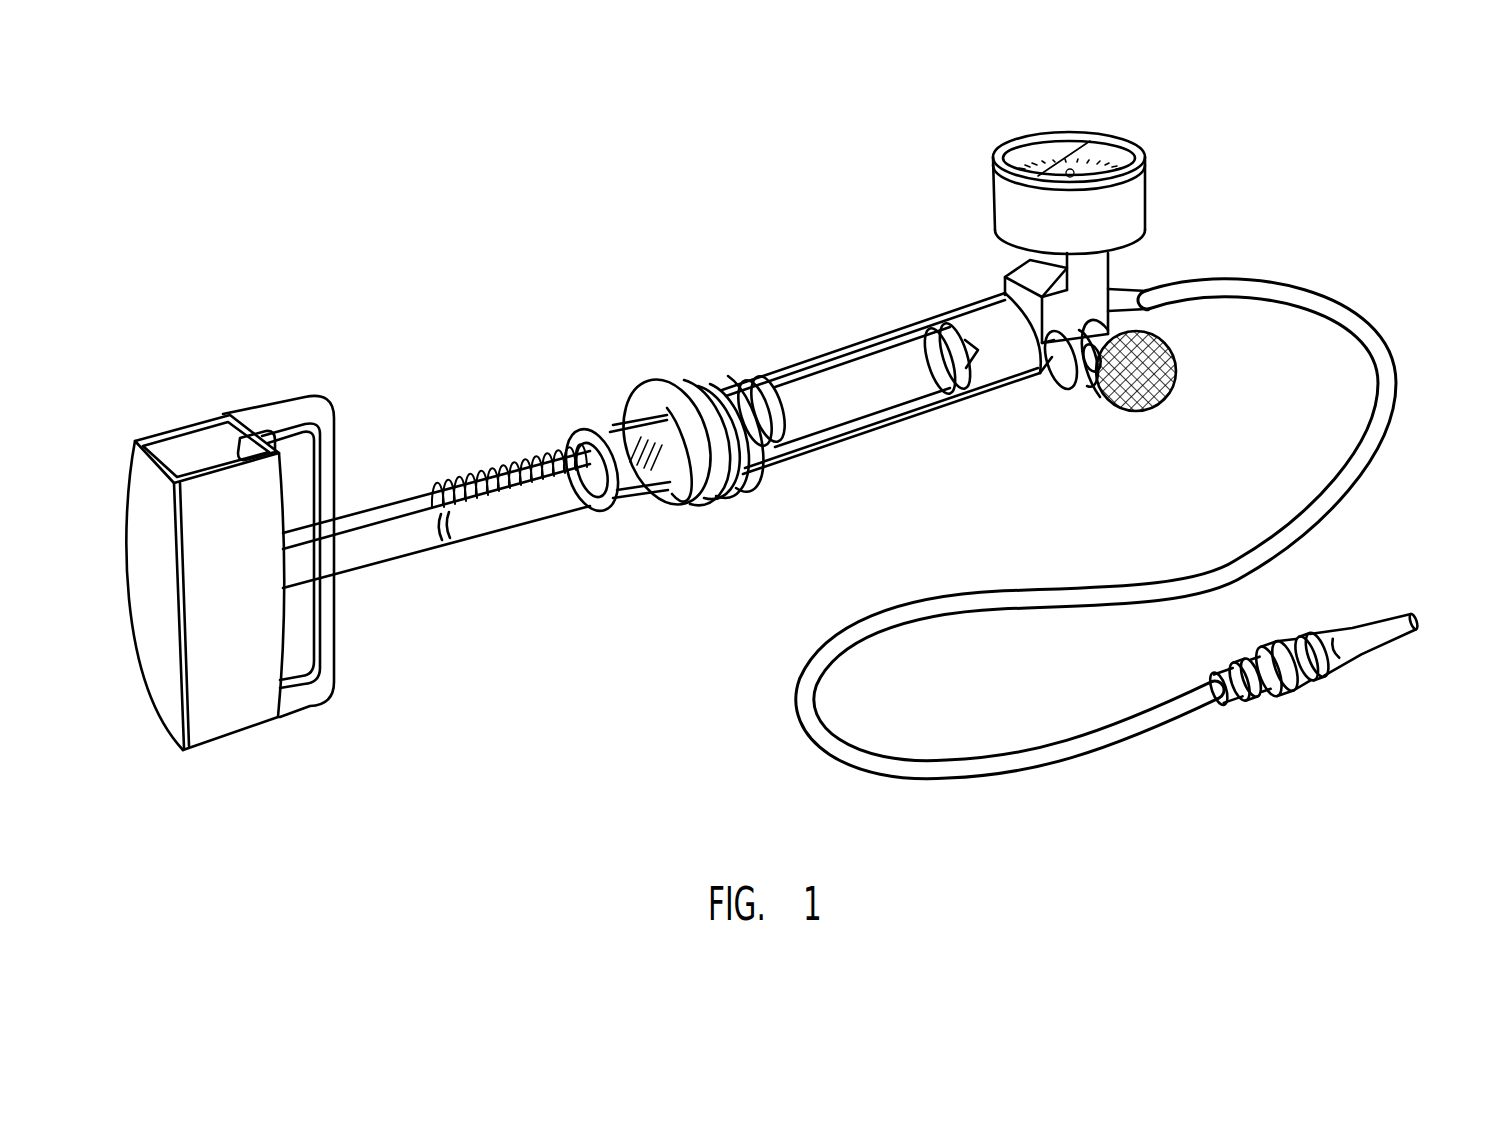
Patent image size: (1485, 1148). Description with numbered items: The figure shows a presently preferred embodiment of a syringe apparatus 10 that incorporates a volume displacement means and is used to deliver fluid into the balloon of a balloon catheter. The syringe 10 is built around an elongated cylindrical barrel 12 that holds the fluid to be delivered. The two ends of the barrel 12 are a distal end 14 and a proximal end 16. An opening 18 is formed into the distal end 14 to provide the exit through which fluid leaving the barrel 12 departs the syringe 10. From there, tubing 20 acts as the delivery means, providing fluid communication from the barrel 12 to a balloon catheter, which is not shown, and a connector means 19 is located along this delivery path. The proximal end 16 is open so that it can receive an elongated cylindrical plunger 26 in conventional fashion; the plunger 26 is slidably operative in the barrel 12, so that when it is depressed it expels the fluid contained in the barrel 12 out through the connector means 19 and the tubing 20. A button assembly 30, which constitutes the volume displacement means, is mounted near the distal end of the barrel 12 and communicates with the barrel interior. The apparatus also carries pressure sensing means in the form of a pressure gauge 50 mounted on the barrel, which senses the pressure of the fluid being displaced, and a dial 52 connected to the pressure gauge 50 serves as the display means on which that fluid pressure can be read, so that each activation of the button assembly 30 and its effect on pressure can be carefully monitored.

The syringe apparatus 10 is at (651, 550).
The barrel 12 is at (837, 348).
The distal end 14 is at (1031, 378).
The proximal end 16 is at (770, 470).
The opening 18 is at (1172, 306).
The connector means 19 is at (1305, 686).
The tubing 20 is at (1384, 432).
The plunger 26 is at (380, 545).
The button assembly 30 is at (1187, 380).
The pressure gauge 50 is at (1088, 263).
The dial 52 is at (1098, 163).